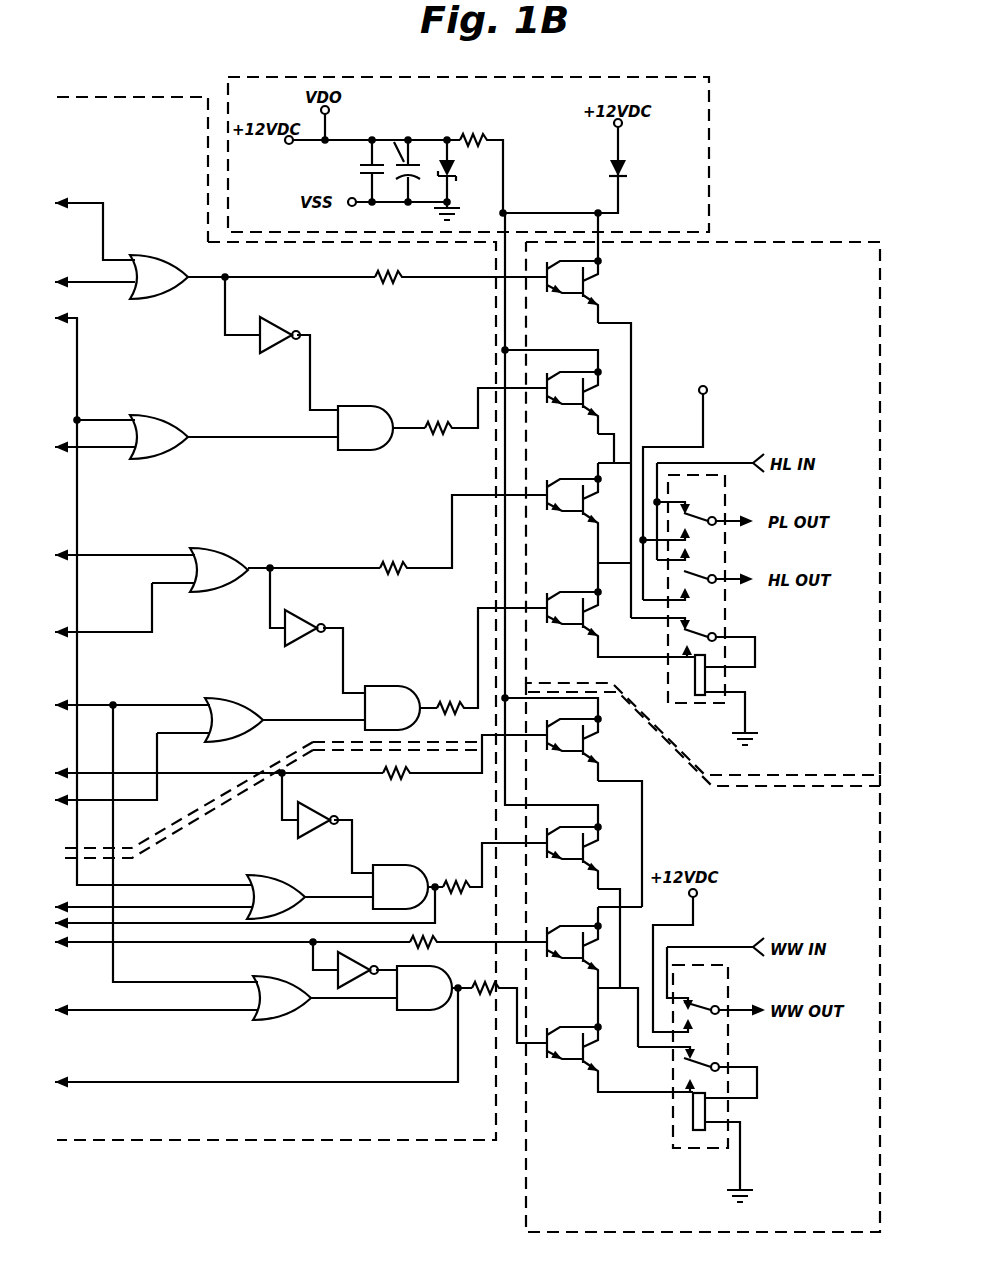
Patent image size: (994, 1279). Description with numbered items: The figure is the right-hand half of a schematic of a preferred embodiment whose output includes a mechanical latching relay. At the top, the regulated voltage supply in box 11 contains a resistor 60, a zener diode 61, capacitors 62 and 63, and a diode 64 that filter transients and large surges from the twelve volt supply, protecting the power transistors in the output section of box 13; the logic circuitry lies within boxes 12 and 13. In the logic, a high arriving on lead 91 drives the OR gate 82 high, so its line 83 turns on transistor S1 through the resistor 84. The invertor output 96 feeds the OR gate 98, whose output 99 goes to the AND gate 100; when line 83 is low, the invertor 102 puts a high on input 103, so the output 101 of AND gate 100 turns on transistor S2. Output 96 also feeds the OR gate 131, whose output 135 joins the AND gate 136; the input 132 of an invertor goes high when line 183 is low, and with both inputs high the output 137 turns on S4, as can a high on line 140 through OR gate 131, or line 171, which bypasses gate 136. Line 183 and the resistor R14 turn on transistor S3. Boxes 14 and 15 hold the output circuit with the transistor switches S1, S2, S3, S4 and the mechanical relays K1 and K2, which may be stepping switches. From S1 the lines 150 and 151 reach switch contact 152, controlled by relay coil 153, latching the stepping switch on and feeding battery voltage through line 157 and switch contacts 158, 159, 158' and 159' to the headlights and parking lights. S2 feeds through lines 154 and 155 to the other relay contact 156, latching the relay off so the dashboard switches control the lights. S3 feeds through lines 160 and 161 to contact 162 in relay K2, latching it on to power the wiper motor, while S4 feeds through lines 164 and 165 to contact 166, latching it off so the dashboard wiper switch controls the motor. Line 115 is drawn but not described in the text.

The regulated voltage supply section 11 is at (716, 136).
The logic circuitry box 12 is at (114, 88).
The output section 13 is at (180, 1156).
The latching relay output circuit box 14 is at (780, 222).
The latching relay output circuit box 15 is at (515, 1199).
The resistor 60 is at (471, 128).
The zener diode 61 is at (455, 178).
The capacitor 62 is at (360, 165).
The capacitor 63 is at (395, 146).
The diode 64 is at (626, 172).
The OR gate 82 is at (161, 255).
The output line 83 is at (296, 272).
The resistor 84 is at (392, 288).
The lead 91 is at (90, 281).
The invertor output 96 is at (79, 357).
The OR gate 98 is at (147, 416).
The OR gate output 99 is at (240, 416).
The AND gate 100 is at (364, 395).
The AND gate output 101 is at (412, 420).
The invertor 102 is at (260, 349).
The input line 103 is at (312, 360).
The input line 115 is at (104, 450).
The OR gate 131 is at (248, 876).
The invertor input 132 is at (283, 807).
The OR gate output 135 is at (328, 896).
The AND gate 136 is at (391, 865).
The AND gate output 137 is at (449, 882).
The line 140 is at (186, 907).
The line 150 is at (633, 345).
The line 151 is at (606, 575).
The switch contact 152 is at (700, 620).
The relay coil 153 is at (710, 690).
The line 154 is at (612, 450).
The line 155 is at (592, 657).
The relay contact 156 is at (690, 652).
The line 157 is at (703, 418).
The switch contact 158 is at (714, 599).
The switch contact 158' is at (714, 511).
The switch contact 159 is at (722, 563).
The switch contact 159' is at (712, 541).
The line 160 is at (646, 814).
The line 161 is at (658, 1042).
The relay contact 162 is at (702, 1056).
The line 164 is at (618, 1000).
The line 165 is at (647, 1097).
The relay contact 166 is at (688, 1082).
The line 171 is at (355, 926).
The line 183 is at (318, 776).
The resistor R14 is at (404, 778).
The mechanical relay K1 is at (710, 712).
The mechanical relay K2 is at (708, 1162).
The transistor switch S1 is at (592, 293).
The transistor switch S2 is at (587, 511).
The transistor switch S3 is at (598, 752).
The transistor switch S4 is at (591, 956).